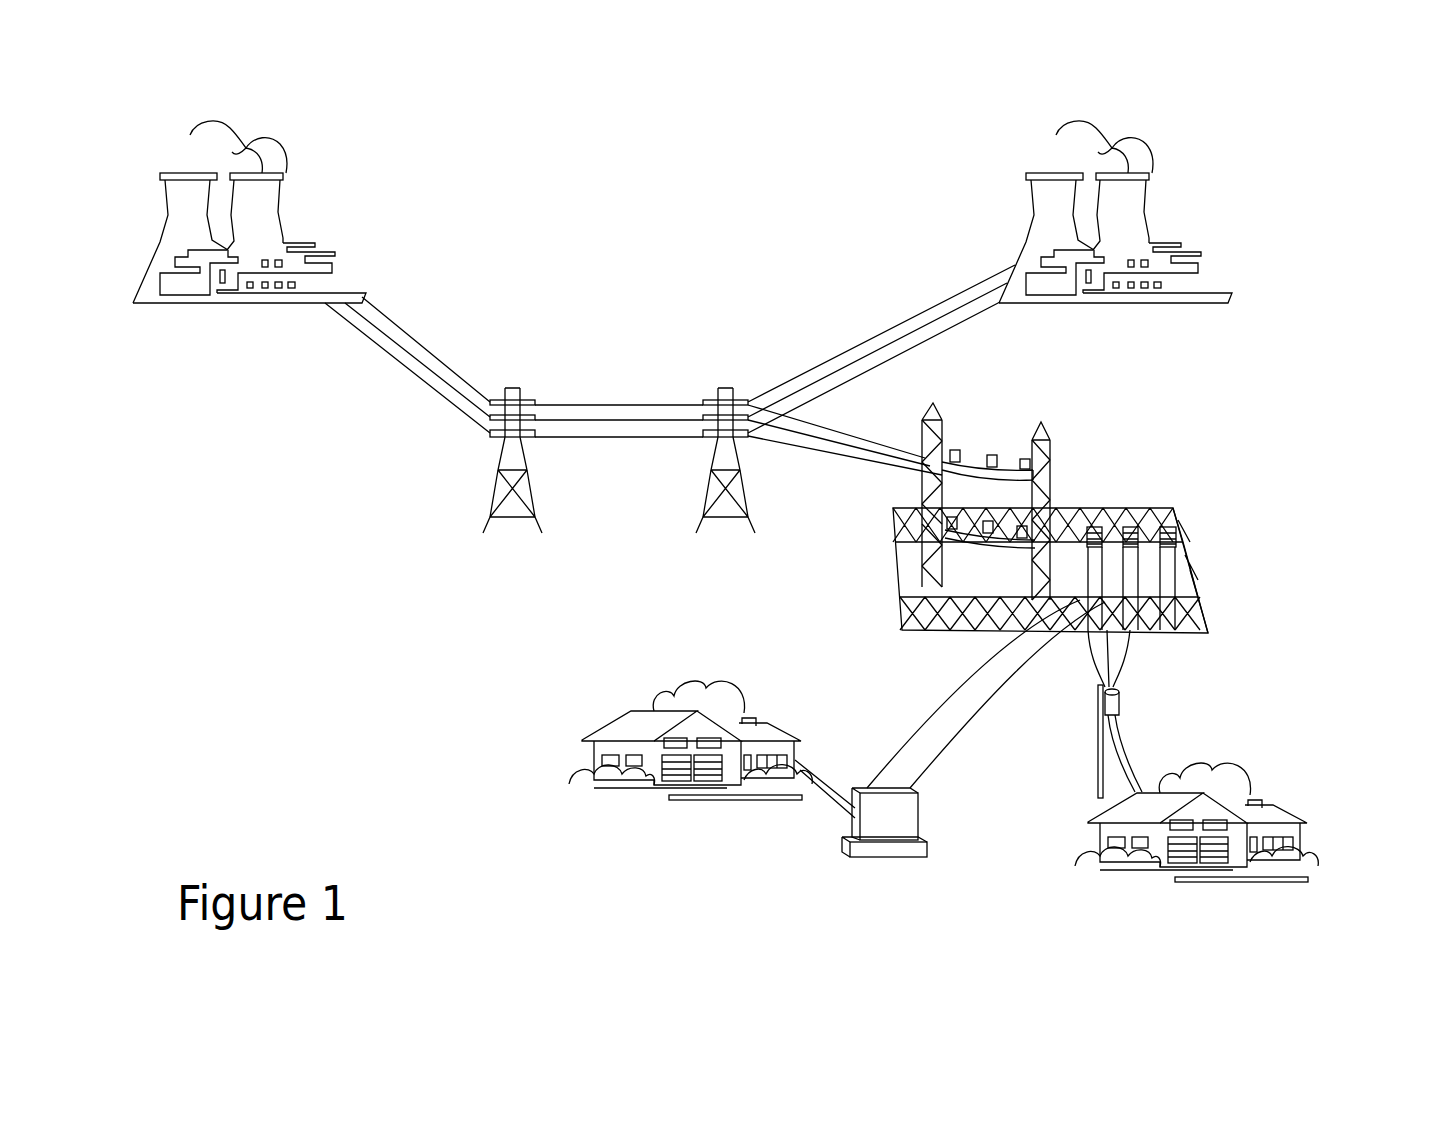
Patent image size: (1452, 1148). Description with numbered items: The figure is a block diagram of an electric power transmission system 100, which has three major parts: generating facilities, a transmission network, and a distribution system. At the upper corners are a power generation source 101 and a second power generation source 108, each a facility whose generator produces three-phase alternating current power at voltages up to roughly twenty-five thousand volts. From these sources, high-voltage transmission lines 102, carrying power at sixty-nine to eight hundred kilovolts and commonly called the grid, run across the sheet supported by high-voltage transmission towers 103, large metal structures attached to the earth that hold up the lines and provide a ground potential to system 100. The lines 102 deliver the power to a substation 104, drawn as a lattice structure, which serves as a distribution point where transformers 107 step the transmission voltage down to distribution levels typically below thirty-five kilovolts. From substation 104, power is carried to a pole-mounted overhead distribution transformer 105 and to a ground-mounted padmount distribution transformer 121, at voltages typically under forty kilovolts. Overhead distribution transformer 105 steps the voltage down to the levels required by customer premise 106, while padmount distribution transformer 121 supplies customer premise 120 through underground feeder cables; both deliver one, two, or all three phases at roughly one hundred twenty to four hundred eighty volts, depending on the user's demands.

The electric power transmission system 100 is at (530, 178).
The power generation source 101 is at (256, 189).
The high-voltage transmission lines 102 is at (760, 379).
The high-voltage transmission towers 103 is at (682, 511).
The substation 104 is at (989, 518).
The overhead distribution transformer 105 is at (1133, 700).
The customer premise 106 is at (1196, 855).
The transformers 107 is at (1190, 535).
The power generation source 108 is at (1146, 187).
The customer premise 120 is at (696, 772).
The padmount distribution transformer 121 is at (937, 776).